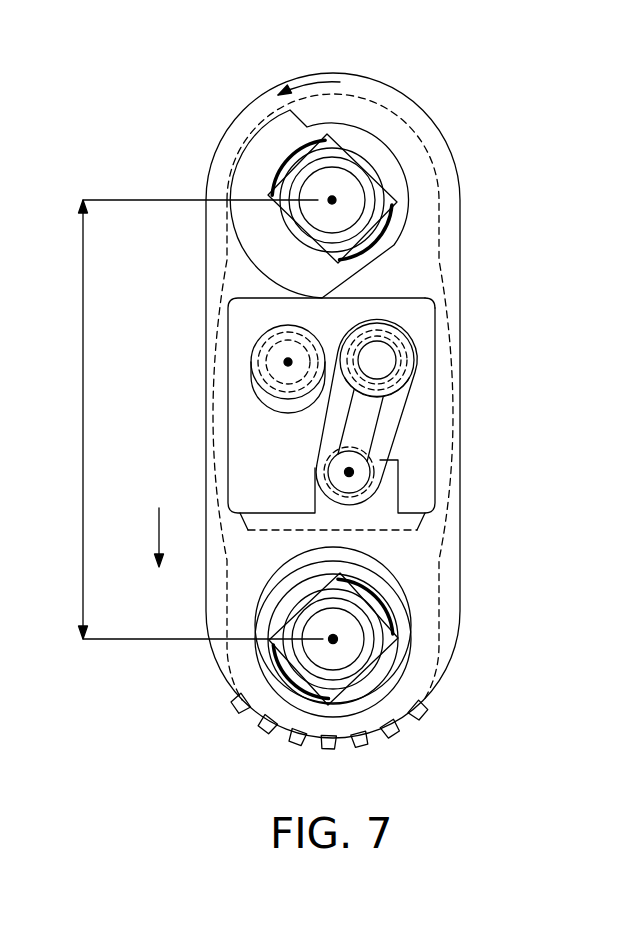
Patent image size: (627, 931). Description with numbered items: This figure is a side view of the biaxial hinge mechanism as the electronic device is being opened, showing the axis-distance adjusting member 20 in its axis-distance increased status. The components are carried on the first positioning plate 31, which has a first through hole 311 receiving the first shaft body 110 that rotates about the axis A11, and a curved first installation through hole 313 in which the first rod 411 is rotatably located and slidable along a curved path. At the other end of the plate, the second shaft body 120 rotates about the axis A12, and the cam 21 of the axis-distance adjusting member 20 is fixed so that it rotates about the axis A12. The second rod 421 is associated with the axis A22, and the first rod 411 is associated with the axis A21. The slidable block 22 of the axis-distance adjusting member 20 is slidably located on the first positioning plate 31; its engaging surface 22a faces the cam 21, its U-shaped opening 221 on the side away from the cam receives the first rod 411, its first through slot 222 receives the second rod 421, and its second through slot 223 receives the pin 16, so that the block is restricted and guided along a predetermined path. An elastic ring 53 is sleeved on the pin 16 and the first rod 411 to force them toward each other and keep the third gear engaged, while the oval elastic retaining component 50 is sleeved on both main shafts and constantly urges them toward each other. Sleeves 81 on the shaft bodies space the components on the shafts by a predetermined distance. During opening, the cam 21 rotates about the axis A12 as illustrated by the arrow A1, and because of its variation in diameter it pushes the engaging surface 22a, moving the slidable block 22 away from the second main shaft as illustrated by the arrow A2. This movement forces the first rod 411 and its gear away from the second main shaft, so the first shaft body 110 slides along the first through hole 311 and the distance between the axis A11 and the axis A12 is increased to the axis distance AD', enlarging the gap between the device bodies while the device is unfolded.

The first positioning plate 31 is at (252, 92).
The axis-distance adjusting member 20 is at (165, 112).
The cam 21 is at (255, 153).
The slidable block 22 is at (250, 290).
The engaging surface 22a is at (420, 297).
The second shaft body 120 is at (403, 193).
The axis A12 is at (334, 199).
The arrow A1 is at (308, 83).
The second rod 421 is at (226, 375).
The axis A22 is at (288, 362).
The first through slot 222 is at (283, 405).
The pin 16 is at (329, 397).
The second through slot 223 is at (371, 399).
The elastic ring 53 is at (384, 414).
The first installation through hole 313 is at (426, 436).
The U-shaped opening 221 is at (380, 502).
The first rod 411 is at (431, 475).
The axis A21 is at (353, 474).
The elastic retaining component 50 is at (220, 408).
The first through hole 311 is at (373, 562).
The sleeve 81 is at (402, 615).
The first shaft body 110 is at (403, 639).
The axis A11 is at (335, 642).
The axis distance AD' is at (178, 419).
The arrow A2 is at (157, 553).